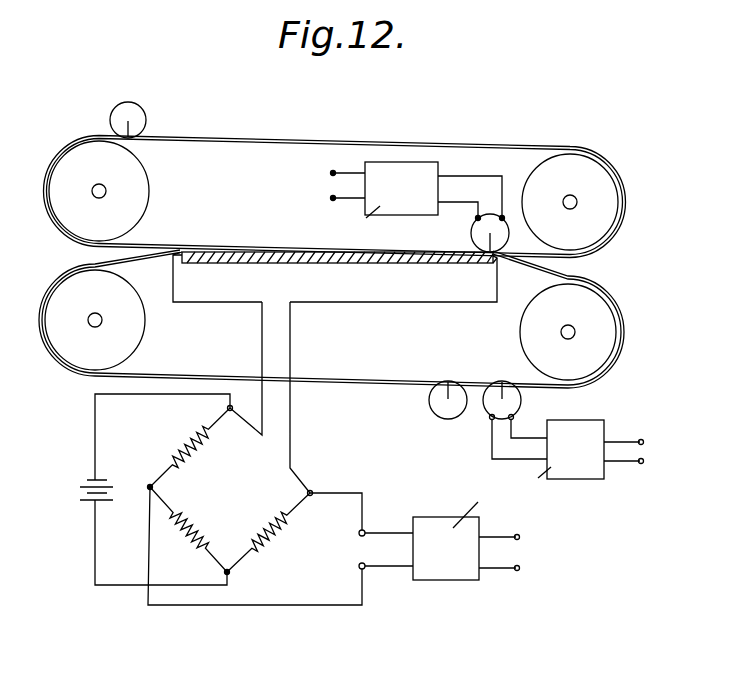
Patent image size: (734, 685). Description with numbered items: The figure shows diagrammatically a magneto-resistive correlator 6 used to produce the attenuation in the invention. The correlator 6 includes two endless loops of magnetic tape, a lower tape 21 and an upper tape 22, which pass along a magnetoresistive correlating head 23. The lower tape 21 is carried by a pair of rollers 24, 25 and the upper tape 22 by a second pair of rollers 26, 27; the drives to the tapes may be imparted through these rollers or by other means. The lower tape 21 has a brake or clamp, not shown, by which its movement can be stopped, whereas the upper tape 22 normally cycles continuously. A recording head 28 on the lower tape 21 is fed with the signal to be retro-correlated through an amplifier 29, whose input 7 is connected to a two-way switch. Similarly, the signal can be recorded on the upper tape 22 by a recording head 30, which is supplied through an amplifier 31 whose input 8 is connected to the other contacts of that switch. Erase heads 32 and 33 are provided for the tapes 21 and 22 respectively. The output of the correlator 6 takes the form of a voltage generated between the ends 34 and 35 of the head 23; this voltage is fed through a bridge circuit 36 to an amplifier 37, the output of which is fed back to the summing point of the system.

The correlator 6 is at (332, 442).
The input 7 is at (657, 454).
The input 8 is at (313, 187).
The lower tape 21 is at (218, 375).
The upper tape 22 is at (456, 144).
The magnetoresistive correlating head 23 is at (352, 259).
The roller 24 is at (145, 325).
The roller 25 is at (520, 336).
The roller 26 is at (149, 191).
The roller 27 is at (560, 170).
The recording head 28 is at (522, 402).
The amplifier 29 is at (571, 466).
The recording head 30 is at (470, 232).
The amplifier 31 is at (386, 176).
The erase head 32 is at (430, 404).
The erase head 33 is at (127, 100).
The end of head 34 is at (176, 248).
The end of head 35 is at (497, 267).
The bridge circuit 36 is at (244, 497).
The amplifier 37 is at (437, 568).